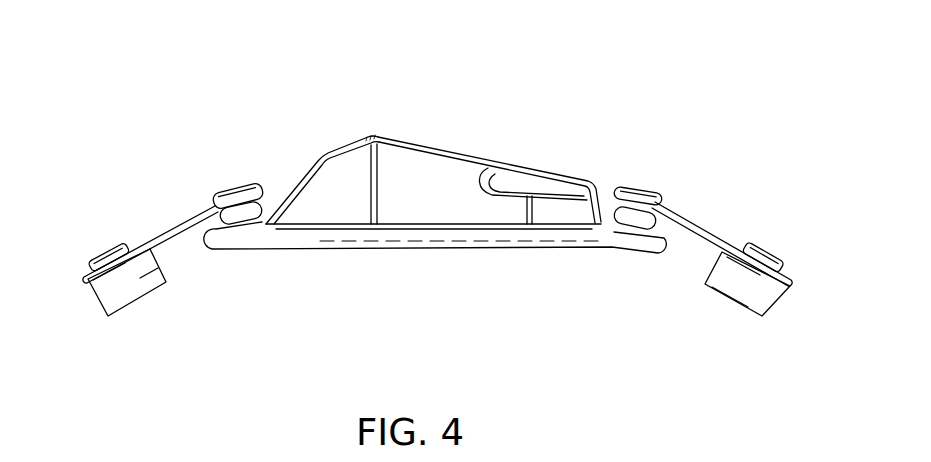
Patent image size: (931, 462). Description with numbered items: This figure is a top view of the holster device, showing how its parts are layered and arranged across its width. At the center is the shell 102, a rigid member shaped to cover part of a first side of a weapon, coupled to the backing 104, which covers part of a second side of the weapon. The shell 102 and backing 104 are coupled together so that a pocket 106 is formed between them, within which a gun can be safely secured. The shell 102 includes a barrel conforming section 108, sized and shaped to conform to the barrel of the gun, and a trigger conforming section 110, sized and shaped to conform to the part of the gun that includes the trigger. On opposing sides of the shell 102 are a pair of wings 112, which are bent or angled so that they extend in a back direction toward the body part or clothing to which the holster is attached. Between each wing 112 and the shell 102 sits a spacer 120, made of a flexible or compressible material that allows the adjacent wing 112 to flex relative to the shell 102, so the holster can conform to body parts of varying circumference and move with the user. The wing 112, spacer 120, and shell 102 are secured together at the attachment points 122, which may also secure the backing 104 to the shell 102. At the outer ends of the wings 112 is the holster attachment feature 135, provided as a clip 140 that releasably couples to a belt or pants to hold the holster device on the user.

The shell 102 is at (459, 154).
The backing 104 is at (416, 235).
The pocket 106 is at (408, 178).
The barrel conforming section 108 is at (329, 152).
The trigger conforming section 110 is at (520, 182).
The wing 112 is at (173, 222).
The spacer 120 is at (240, 216).
The attachment point 122 is at (236, 172).
The holster attachment feature 135 is at (716, 310).
The clip 140 is at (118, 294).